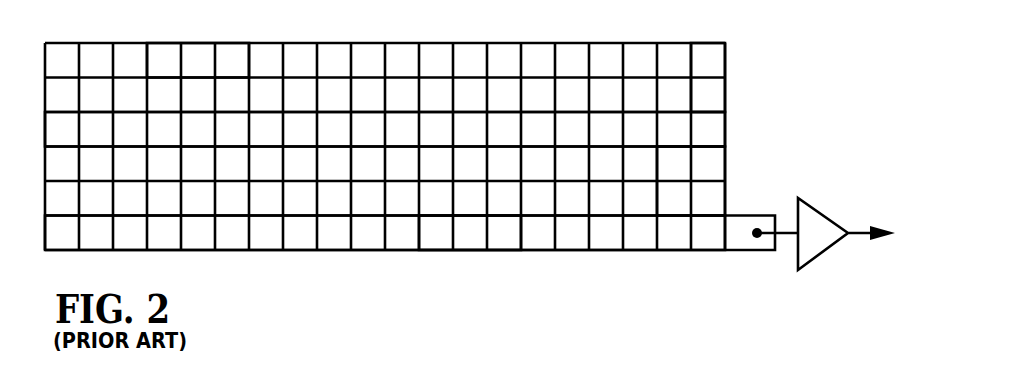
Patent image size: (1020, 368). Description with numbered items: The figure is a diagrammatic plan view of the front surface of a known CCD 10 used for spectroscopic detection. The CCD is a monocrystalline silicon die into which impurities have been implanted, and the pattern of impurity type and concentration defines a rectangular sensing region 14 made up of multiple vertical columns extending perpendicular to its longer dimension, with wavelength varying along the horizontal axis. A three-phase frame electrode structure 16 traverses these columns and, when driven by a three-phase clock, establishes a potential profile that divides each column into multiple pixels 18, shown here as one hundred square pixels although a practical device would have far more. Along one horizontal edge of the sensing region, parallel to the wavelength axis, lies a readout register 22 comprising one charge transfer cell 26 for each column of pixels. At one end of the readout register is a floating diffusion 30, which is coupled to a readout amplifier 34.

The CCD 10 is at (350, 288).
The sensing region 14 is at (740, 132).
The three-phase frame electrode structure 16 is at (530, 307).
The pixels 18 is at (198, 60).
The readout register 22 is at (286, 266).
The charge transfer cell 26 is at (433, 230).
The floating diffusion 30 is at (743, 243).
The readout amplifier 34 is at (817, 248).